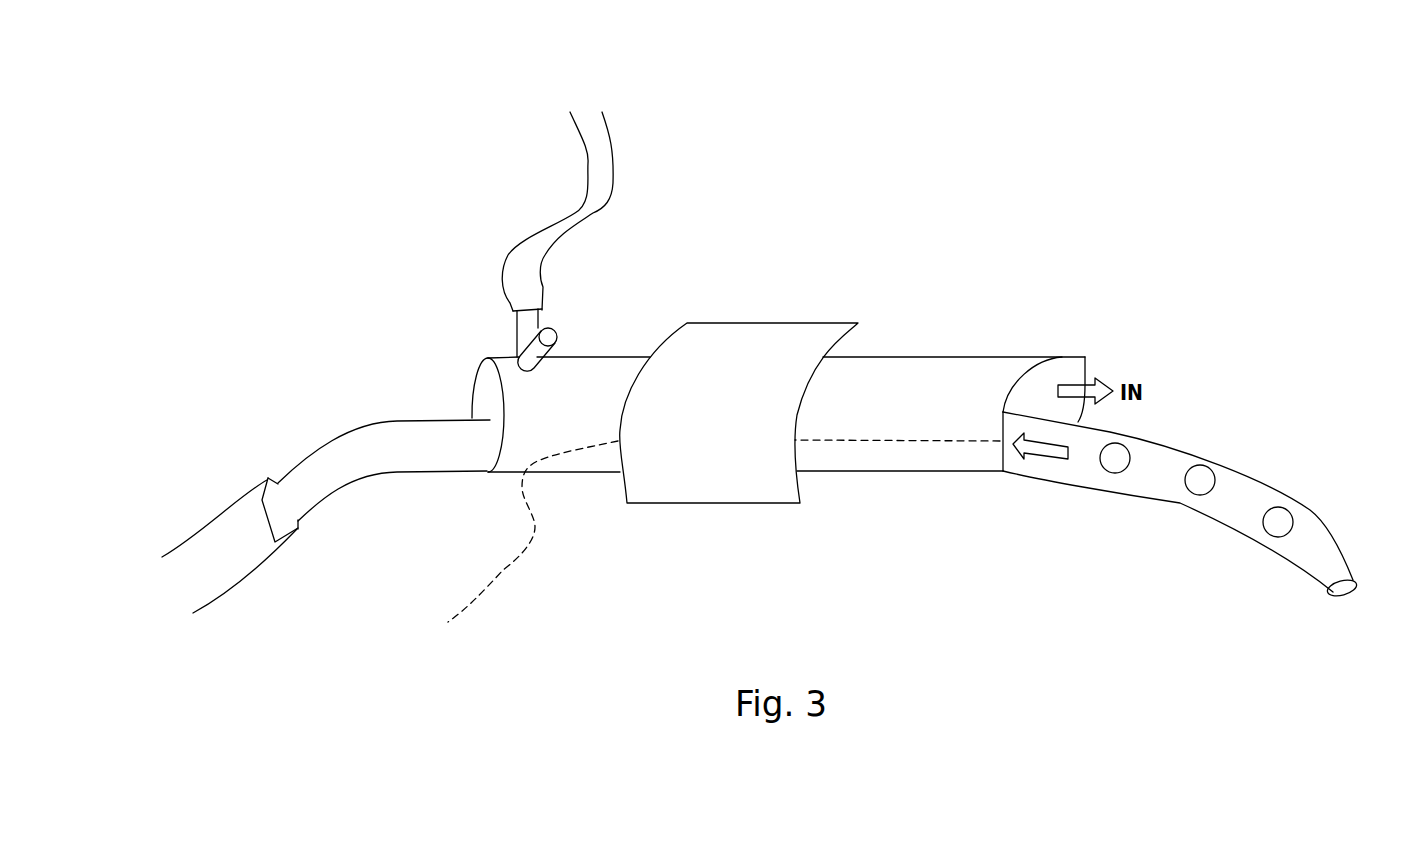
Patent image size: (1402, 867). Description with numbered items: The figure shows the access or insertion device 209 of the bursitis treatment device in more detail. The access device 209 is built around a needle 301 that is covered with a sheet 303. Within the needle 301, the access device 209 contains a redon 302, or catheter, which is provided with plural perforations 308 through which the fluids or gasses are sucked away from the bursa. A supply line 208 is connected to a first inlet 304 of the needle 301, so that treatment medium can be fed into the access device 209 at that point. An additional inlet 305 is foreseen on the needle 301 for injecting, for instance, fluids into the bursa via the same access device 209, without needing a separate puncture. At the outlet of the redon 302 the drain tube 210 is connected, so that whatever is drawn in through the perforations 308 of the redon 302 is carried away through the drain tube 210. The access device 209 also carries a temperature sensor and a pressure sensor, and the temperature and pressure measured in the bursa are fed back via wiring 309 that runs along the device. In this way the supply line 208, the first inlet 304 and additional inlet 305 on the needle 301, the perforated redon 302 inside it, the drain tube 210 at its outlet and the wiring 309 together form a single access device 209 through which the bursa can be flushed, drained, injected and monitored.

The supply line 208 is at (608, 145).
The access device 209 is at (359, 170).
The drain tube 210 is at (272, 477).
The needle 301 is at (968, 356).
The redon 302 is at (398, 420).
The sheet 303 is at (755, 322).
The first inlet 304 is at (517, 320).
The additional inlet 305 is at (575, 330).
The perforations 308 is at (1295, 515).
The wiring 309 is at (500, 577).